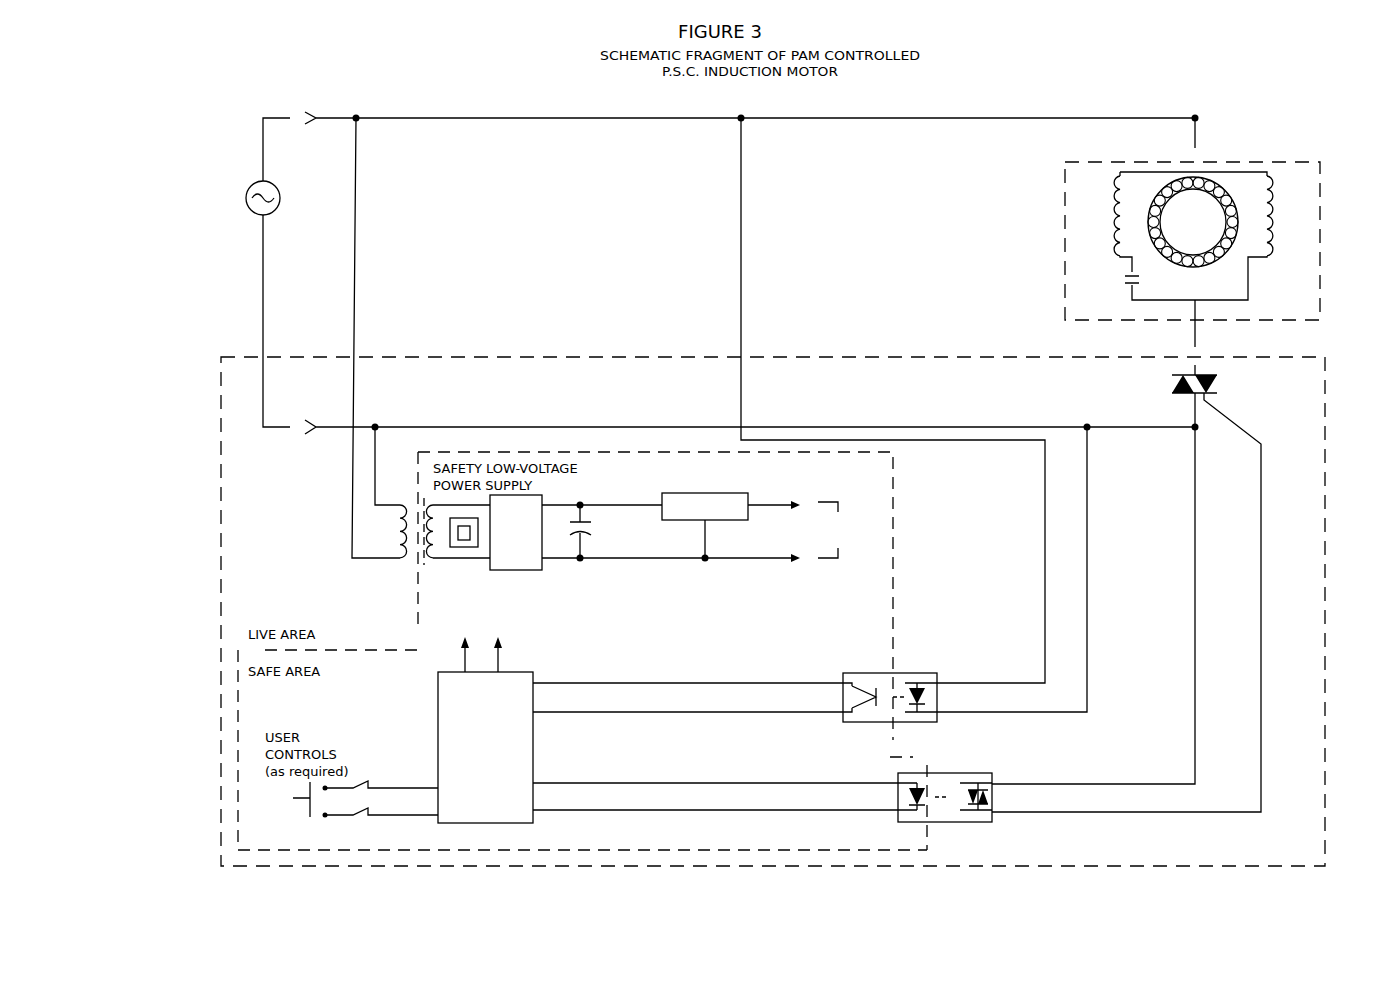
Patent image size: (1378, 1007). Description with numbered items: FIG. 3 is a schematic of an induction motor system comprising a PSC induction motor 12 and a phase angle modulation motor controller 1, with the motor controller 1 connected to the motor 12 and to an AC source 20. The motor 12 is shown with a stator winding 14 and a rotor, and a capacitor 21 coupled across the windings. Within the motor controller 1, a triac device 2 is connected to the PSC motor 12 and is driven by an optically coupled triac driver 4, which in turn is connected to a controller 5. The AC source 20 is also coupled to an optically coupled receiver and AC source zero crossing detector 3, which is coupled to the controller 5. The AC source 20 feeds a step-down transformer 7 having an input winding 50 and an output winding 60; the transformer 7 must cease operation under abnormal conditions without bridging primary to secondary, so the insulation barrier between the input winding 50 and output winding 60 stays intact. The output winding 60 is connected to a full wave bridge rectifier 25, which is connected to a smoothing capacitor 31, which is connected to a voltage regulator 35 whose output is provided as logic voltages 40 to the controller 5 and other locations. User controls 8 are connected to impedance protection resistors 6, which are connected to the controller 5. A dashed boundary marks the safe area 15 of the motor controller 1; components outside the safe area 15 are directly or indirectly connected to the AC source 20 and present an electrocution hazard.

The phase angle modulation motor controller 1 is at (1330, 548).
The triac device 2 is at (1225, 386).
The optically coupled receiver and AC source zero crossing detector 3 is at (945, 672).
The optically coupled triac driver 4 is at (987, 826).
The controller 5 is at (538, 821).
The impedance protection resistors 6 is at (358, 818).
The step-down transformer 7 is at (410, 494).
The user controls 8 is at (303, 807).
The PSC induction motor 12 is at (1245, 146).
The stator winding 14 is at (1113, 219).
The safe area 15 is at (900, 531).
The AC source 20 is at (242, 198).
The capacitor 21 is at (1125, 280).
The full wave bridge rectifier 25 is at (548, 504).
The smoothing capacitor 31 is at (590, 540).
The voltage regulator 35 is at (758, 491).
The logic voltages 40 is at (825, 566).
The input winding 50 is at (348, 522).
The output winding 60 is at (425, 566).